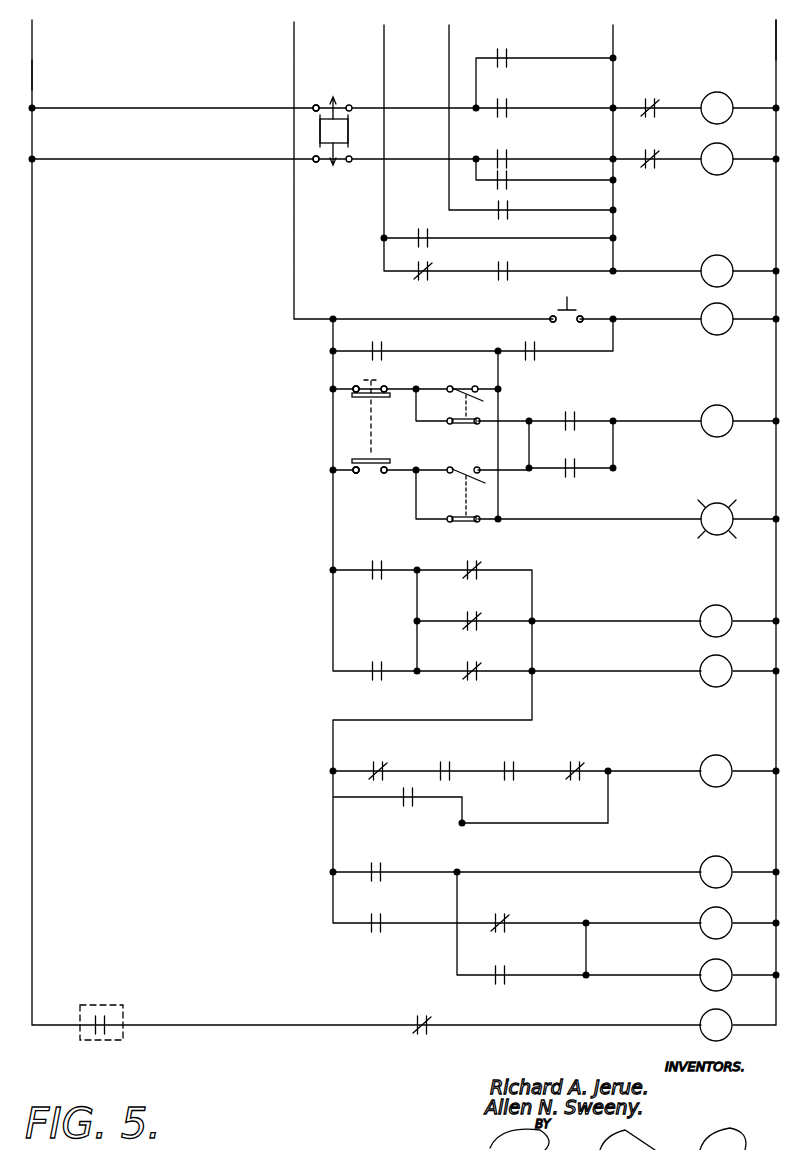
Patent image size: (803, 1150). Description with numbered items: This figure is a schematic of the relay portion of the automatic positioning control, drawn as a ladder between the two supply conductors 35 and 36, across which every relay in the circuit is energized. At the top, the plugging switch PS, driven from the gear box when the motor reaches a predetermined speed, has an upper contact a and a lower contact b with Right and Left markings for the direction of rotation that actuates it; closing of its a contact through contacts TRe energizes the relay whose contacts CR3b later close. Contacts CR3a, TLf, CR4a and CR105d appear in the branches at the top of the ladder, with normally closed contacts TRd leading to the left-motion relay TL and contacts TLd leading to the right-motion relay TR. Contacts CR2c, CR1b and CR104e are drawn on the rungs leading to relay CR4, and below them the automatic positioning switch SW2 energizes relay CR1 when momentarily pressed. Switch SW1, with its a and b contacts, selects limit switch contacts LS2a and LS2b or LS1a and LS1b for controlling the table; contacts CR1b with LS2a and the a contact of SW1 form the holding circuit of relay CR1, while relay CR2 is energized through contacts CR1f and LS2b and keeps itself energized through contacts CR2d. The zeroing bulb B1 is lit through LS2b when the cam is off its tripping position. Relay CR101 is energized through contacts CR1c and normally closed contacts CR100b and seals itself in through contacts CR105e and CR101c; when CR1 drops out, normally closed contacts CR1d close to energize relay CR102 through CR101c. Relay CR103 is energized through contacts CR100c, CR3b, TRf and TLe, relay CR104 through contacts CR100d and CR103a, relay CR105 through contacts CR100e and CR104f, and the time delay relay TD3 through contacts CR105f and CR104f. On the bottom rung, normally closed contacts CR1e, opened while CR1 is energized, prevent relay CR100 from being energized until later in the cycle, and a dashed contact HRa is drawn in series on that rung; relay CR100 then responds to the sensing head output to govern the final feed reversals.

The conductor 35 is at (34, 74).
The conductor 36 is at (776, 38).
The plugging switch PS is at (320, 131).
The a contacts a is at (350, 390).
The b contacts b is at (350, 468).
The right-hand direction marking Right is at (326, 80).
The left-hand direction marking Left is at (331, 183).
The relay CR3 contact a CR3a is at (512, 45).
The contacts TRe is at (500, 98).
The contacts TRd is at (643, 96).
The relay TL is at (735, 85).
The timer TL contact f TLf is at (516, 149).
The contacts TLd is at (654, 148).
The relay TR is at (745, 146).
The relay CR4 contact a CR4a is at (506, 176).
The contacts CR105d is at (507, 205).
The contacts CR2c is at (383, 348).
The contacts CR1b is at (530, 343).
The contacts CR104e is at (423, 282).
The relay CR4 coil CR4 is at (732, 248).
The automatic positioning switch SW2 is at (576, 295).
The relay CR1 is at (745, 300).
The switch SW1 is at (384, 380).
The contacts LS2a is at (474, 376).
The contacts LS2b is at (462, 428).
The contacts CR1f is at (580, 405).
The relay CR2 is at (735, 395).
The contacts CR2d is at (578, 455).
The contacts LS1b is at (470, 460).
The contacts LS1a is at (462, 526).
The zeroing light bulb B1 is at (716, 526).
The contacts CR1c is at (388, 552).
The contacts CR100b is at (477, 562).
The contacts CR105e is at (482, 606).
The relay CR101 is at (728, 597).
The contacts CR101c is at (388, 653).
The contacts CR1d is at (477, 662).
The relay CR102 is at (700, 662).
The contacts TLe is at (388, 750).
The contacts TRf is at (455, 753).
The contacts CR3b is at (519, 750).
The contacts CR100c is at (592, 744).
The relay CR103 is at (735, 742).
The contacts CR103a is at (410, 806).
The contacts CR100d is at (388, 856).
The relay CR104 is at (728, 848).
The contacts CR100e is at (512, 906).
The relay CR105 is at (700, 912).
The contacts CR104f is at (378, 933).
The contacts CR105f is at (512, 960).
The time delay relay TD3 is at (700, 965).
The contacts CR1e is at (433, 1002).
The relay CR100 is at (700, 1015).
The relay HR contact a HRa is at (104, 995).